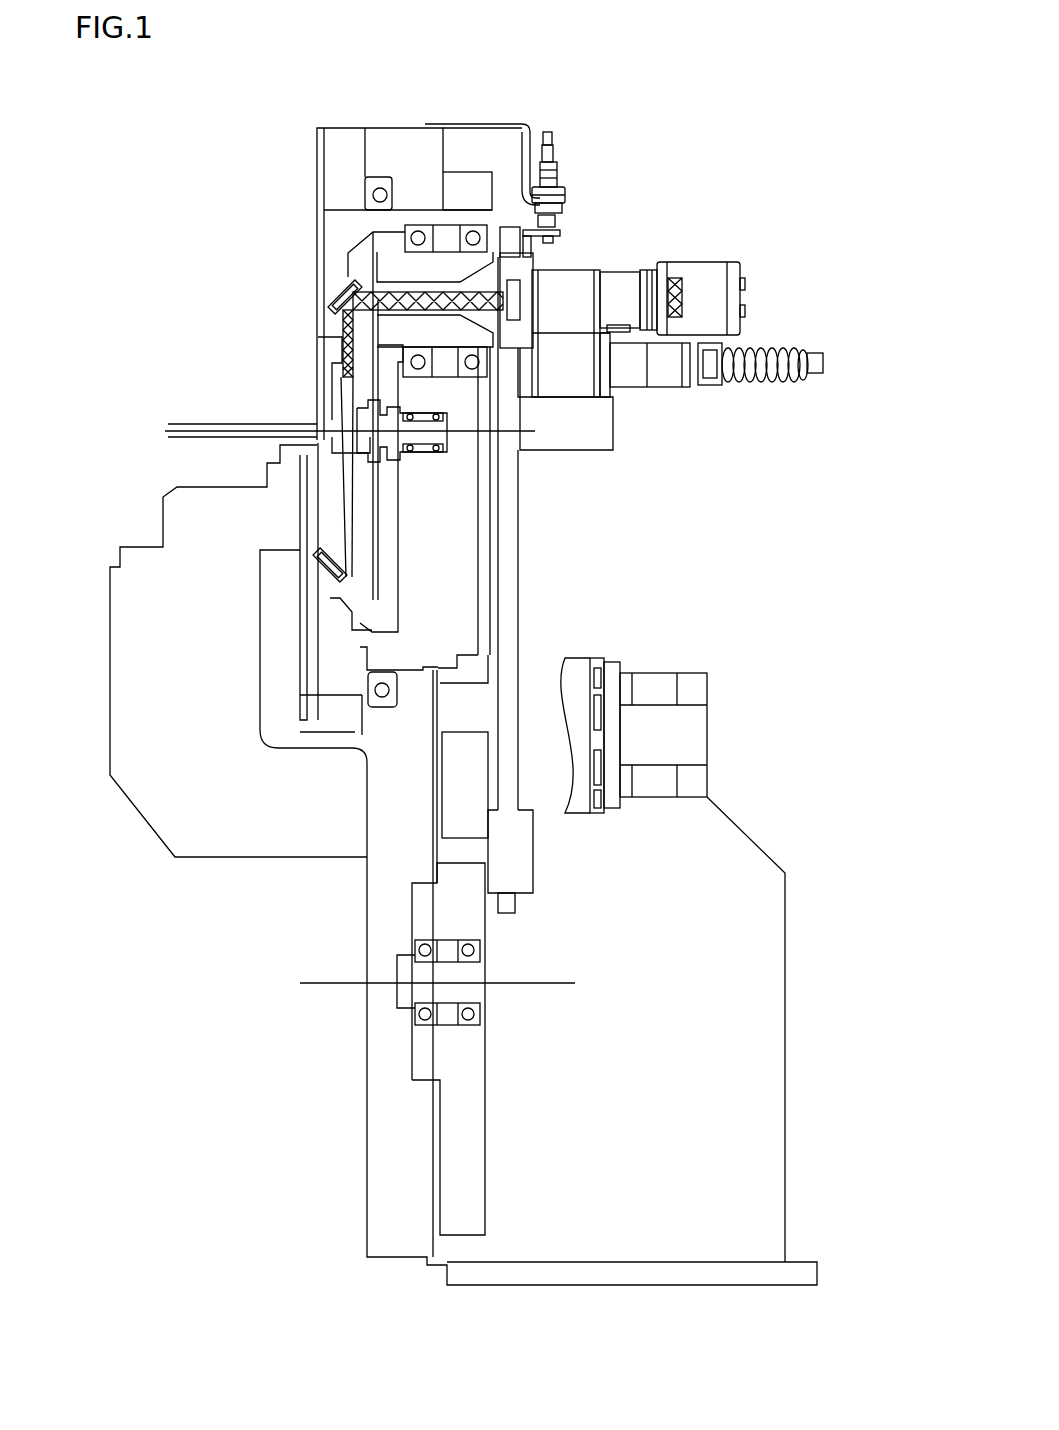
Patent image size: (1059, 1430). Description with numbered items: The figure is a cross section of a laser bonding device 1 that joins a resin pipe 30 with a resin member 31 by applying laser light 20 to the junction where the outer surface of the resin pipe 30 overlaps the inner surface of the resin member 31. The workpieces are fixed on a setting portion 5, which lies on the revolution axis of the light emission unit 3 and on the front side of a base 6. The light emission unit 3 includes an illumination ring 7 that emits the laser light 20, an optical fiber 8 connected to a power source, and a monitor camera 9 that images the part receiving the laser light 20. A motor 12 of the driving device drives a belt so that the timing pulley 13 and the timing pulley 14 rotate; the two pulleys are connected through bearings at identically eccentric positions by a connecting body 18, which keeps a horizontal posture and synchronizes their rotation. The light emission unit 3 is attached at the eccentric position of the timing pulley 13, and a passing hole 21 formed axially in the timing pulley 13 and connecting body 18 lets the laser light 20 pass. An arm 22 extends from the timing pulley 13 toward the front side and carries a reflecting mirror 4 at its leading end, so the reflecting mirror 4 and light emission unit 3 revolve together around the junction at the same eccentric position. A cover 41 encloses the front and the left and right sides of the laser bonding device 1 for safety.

The laser bonding device 1 is at (815, 122).
The light emission unit 3 is at (683, 207).
The reflecting mirror 4 is at (340, 282).
The setting portion 5 is at (303, 410).
The base 6 is at (510, 1238).
The illumination ring 7 is at (537, 253).
The optical fiber 8 is at (747, 380).
The monitor camera 9 is at (697, 285).
The motor 12 is at (690, 737).
The timing pulley 13 is at (457, 190).
The timing pulley 14 is at (450, 1115).
The connecting body 18 is at (512, 568).
The laser light 20 is at (330, 330).
The passing hole 21 is at (415, 243).
The arm 22 is at (343, 225).
The resin pipe 30 is at (188, 423).
The resin member 31 is at (363, 447).
The cover 41 is at (303, 663).